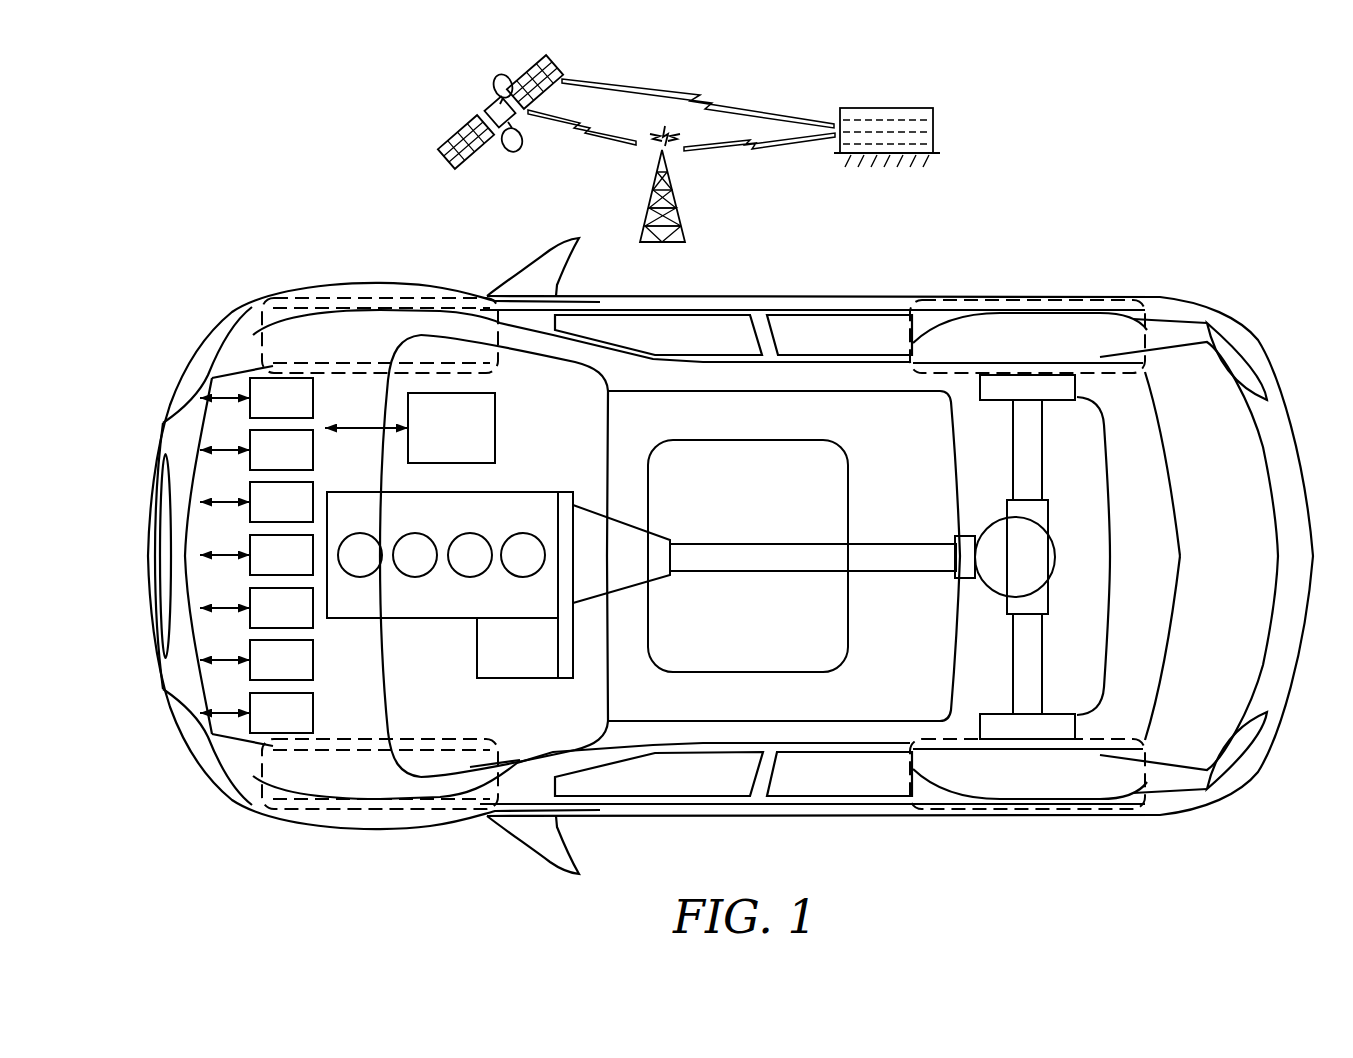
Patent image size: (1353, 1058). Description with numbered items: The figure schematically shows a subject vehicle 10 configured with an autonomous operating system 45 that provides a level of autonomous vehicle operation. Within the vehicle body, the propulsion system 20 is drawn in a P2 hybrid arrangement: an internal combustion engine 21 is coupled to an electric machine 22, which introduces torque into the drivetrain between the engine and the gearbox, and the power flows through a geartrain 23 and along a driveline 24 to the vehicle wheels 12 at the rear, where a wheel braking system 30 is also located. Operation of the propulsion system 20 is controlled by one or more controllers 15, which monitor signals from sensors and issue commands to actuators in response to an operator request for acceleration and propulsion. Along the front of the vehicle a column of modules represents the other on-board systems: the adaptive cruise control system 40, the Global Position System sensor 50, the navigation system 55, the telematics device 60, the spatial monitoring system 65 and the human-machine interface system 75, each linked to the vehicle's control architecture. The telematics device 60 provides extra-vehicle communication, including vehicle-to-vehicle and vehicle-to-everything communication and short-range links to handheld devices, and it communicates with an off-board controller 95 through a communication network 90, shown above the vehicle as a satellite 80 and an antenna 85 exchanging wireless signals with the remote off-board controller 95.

The subject vehicle 10 is at (186, 302).
The vehicle wheel 12 is at (1028, 335).
The controller 15 is at (437, 441).
The propulsion system 20 is at (638, 580).
The internal combustion engine 21 is at (355, 597).
The electric machine 22 is at (520, 657).
The geartrain 23 is at (610, 545).
The driveline 24 is at (920, 535).
The wheel braking system 30 is at (1110, 530).
The adaptive cruise control system 40 is at (267, 411).
The autonomous operating system 45 is at (267, 463).
The Global Position System sensor 50 is at (267, 515).
The navigation system 55 is at (267, 568).
The telematics device 60 is at (267, 621).
The spatial monitoring system 65 is at (267, 673).
The human-machine interface system 75 is at (267, 726).
The satellite 80 is at (520, 125).
The antenna 85 is at (680, 185).
The communication network 90 is at (683, 118).
The off-board controller 95 is at (936, 126).